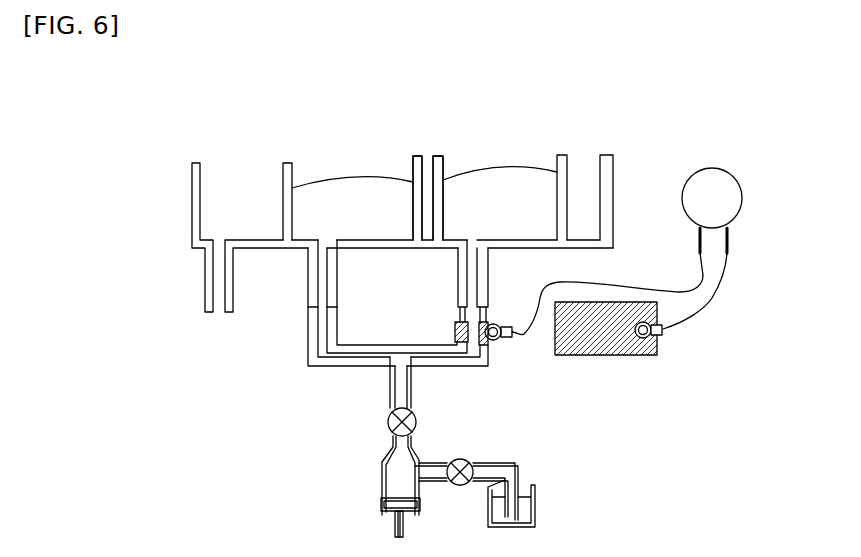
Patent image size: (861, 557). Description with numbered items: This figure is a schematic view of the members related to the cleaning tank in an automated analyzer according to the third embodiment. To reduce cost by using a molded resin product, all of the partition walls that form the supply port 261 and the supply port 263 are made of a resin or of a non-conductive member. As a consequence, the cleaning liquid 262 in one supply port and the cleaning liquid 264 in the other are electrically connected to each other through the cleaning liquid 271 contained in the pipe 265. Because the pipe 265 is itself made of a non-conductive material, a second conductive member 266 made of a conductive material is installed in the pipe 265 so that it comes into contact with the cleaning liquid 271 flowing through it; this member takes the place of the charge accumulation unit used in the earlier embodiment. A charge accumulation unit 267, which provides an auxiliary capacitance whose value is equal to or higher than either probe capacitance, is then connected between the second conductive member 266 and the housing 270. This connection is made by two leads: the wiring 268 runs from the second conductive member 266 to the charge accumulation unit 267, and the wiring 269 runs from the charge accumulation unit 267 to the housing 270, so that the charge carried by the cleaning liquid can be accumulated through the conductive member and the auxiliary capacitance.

The supply port 261 is at (373, 173).
The cleaning liquid 262 is at (330, 188).
The supply port 263 is at (527, 155).
The cleaning liquid 264 is at (488, 185).
The pipe 265 is at (313, 325).
The second conductive member 266 is at (455, 328).
The charge accumulation unit 267 is at (720, 200).
The wiring 268 is at (523, 336).
The wiring 269 is at (698, 317).
The housing 270 is at (603, 322).
The cleaning liquid 271 is at (343, 357).